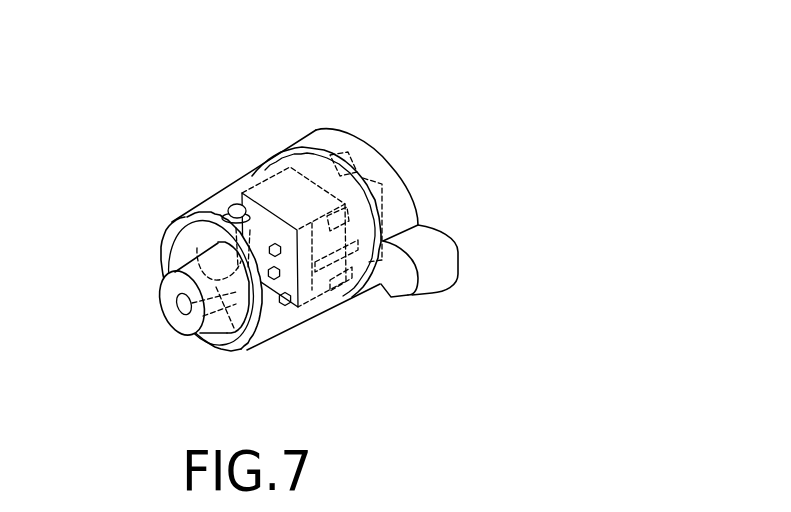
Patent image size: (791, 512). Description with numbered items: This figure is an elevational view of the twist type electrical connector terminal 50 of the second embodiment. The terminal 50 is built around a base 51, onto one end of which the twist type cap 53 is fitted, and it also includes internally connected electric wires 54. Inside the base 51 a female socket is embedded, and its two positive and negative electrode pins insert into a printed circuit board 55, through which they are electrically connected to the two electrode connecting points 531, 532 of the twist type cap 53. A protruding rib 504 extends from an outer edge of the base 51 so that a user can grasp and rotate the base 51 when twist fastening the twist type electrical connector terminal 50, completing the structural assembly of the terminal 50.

The twist type electrical connector terminal 50 is at (431, 149).
The base 51 is at (335, 140).
The protruding rib 504 is at (435, 273).
The printed circuit board 55 is at (306, 272).
The internally connected electric wires 54 is at (175, 242).
The twist type cap 53 is at (253, 188).
The electrode connecting point 531 is at (234, 204).
The electrode connecting point 532 is at (176, 305).